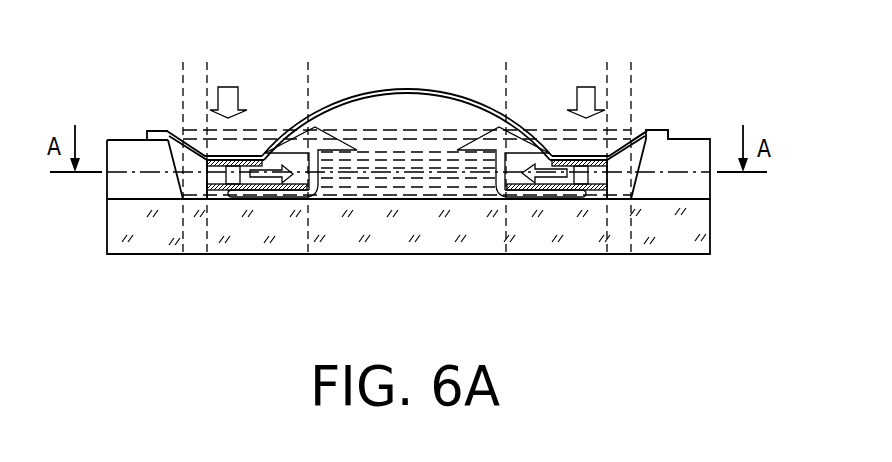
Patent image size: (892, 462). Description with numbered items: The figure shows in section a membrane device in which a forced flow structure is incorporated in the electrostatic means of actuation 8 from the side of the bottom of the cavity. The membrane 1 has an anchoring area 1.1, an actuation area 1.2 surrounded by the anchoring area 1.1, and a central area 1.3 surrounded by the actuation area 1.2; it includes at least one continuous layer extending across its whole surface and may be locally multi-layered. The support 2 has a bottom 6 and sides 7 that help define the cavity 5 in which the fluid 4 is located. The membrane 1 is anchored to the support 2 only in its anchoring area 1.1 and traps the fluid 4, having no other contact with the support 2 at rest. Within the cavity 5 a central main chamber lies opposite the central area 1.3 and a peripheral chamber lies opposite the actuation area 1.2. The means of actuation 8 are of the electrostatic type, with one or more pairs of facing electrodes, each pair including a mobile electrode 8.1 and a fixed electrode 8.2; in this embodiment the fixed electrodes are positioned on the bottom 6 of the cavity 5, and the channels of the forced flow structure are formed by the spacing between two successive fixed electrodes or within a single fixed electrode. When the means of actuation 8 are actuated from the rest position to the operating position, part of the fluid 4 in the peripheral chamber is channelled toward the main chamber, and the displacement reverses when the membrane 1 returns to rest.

The membrane 1 is at (428, 80).
The anchoring area 1.1 is at (658, 132).
The actuation area 1.2 is at (568, 157).
The central area 1.3 is at (425, 90).
The support 2 is at (688, 224).
The fluid 4 is at (405, 182).
The cavity 5 is at (365, 175).
The bottom 6 is at (478, 200).
The sides 7 is at (170, 157).
The means of actuation 8 is at (349, 249).
The mobile electrode 8.1 is at (207, 166).
The fixed electrode 8.2 is at (217, 189).